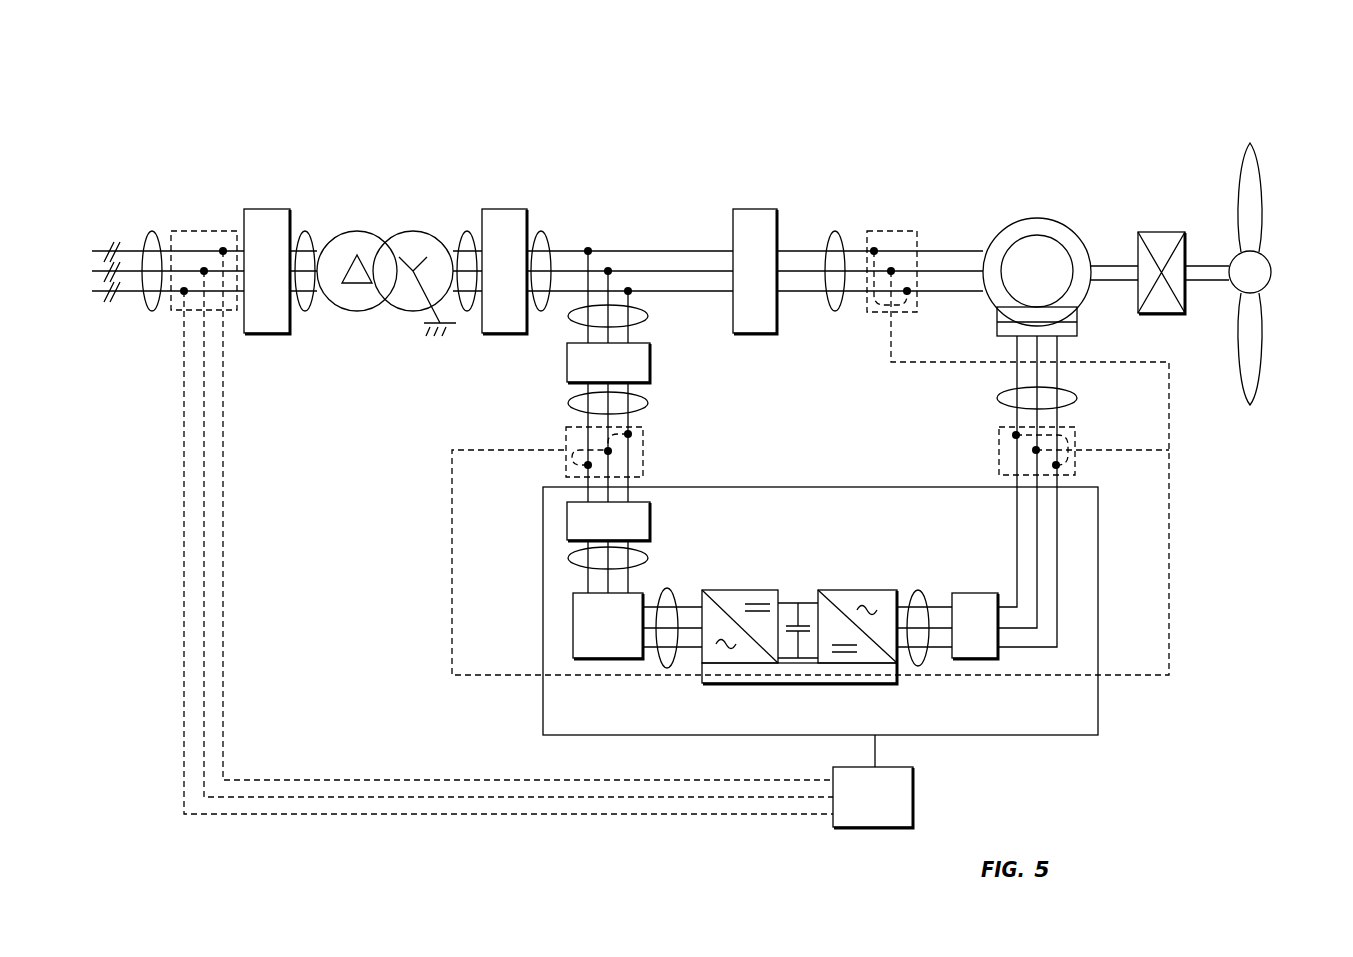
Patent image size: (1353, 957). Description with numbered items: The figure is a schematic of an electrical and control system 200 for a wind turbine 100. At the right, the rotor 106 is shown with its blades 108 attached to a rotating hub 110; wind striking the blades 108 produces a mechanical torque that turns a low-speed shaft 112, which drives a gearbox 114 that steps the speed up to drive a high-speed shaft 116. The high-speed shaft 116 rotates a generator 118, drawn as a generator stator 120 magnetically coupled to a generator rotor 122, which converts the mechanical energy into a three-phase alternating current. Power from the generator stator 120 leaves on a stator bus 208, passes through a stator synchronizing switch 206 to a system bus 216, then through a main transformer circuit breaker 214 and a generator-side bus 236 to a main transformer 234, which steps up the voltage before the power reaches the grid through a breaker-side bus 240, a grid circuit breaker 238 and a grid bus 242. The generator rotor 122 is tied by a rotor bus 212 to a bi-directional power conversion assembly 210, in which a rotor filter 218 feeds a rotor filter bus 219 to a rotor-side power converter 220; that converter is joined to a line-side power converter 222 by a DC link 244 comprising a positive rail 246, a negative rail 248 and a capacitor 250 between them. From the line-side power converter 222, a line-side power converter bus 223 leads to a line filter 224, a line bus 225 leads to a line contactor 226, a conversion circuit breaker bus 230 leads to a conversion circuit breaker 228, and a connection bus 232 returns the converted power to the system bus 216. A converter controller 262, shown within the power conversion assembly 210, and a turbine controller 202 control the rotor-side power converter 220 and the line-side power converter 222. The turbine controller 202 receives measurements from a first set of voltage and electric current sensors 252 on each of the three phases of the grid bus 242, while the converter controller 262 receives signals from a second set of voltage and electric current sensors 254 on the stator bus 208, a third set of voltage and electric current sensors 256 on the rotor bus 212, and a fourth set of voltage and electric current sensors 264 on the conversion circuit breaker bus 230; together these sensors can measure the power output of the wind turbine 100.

The wind turbine 100 is at (1222, 119).
The rotor 106 is at (1290, 271).
The blades 108 is at (1262, 183).
The hub 110 is at (1272, 282).
The low-speed shaft 112 is at (1203, 266).
The gearbox 114 is at (1160, 232).
The high-speed shaft 116 is at (1107, 266).
The generator 118 is at (1027, 232).
The generator stator 120 is at (1037, 218).
The generator rotor 122 is at (1025, 252).
The electrical and control system 200 is at (204, 134).
The turbine controller 202 is at (857, 809).
The stator synchronizing switch 206 is at (762, 209).
The stator bus 208 is at (835, 231).
The power conversion assembly 210 is at (1098, 565).
The rotor bus 212 is at (1075, 398).
The main transformer circuit breaker 214 is at (498, 209).
The system bus 216 is at (541, 231).
The rotor filter 218 is at (972, 593).
The rotor filter bus 219 is at (920, 590).
The rotor-side power converter 220 is at (900, 660).
The line-side power converter 222 is at (700, 657).
The line-side power converter bus 223 is at (670, 590).
The line filter 224 is at (573, 628).
The line bus 225 is at (568, 559).
The line contactor 226 is at (567, 515).
The conversion circuit breaker 228 is at (567, 362).
The conversion circuit breaker bus 230 is at (568, 402).
The connection bus 232 is at (648, 316).
The main transformer 234 is at (413, 231).
The generator-side bus 236 is at (465, 231).
The grid circuit breaker 238 is at (270, 209).
The breaker-side bus 240 is at (305, 231).
The grid bus 242 is at (152, 231).
The DC link 244 is at (824, 619).
The positive rail 246 is at (822, 578).
The negative rail 248 is at (810, 660).
The capacitor 250 is at (792, 626).
The first set of voltage and electric current sensors 252 is at (168, 333).
The second set of voltage and electric current sensors 254 is at (918, 212).
The third set of voltage and electric current sensors 256 is at (992, 452).
The converter controller 262 is at (853, 675).
The fourth set of voltage and electric current sensors 264 is at (643, 462).